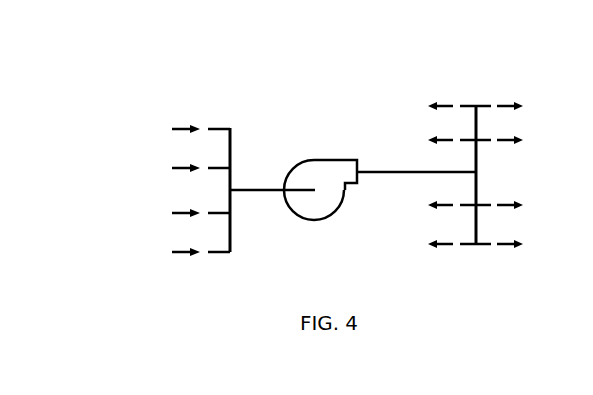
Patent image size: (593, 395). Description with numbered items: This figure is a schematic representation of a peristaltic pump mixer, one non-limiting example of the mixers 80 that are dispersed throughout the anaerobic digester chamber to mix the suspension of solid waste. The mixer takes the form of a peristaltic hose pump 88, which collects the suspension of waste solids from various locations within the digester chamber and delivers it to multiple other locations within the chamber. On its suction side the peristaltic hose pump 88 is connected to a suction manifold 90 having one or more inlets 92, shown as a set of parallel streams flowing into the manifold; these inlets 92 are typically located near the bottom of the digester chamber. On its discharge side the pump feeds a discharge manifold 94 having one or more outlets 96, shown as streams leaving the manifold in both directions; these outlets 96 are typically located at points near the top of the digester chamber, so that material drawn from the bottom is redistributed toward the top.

The mixer 80 is at (248, 84).
The peristaltic hose pump 88 is at (318, 172).
The suction manifold 90 is at (230, 228).
The inlets 92 is at (182, 214).
The discharge manifold 94 is at (474, 230).
The outlets 96 is at (500, 206).